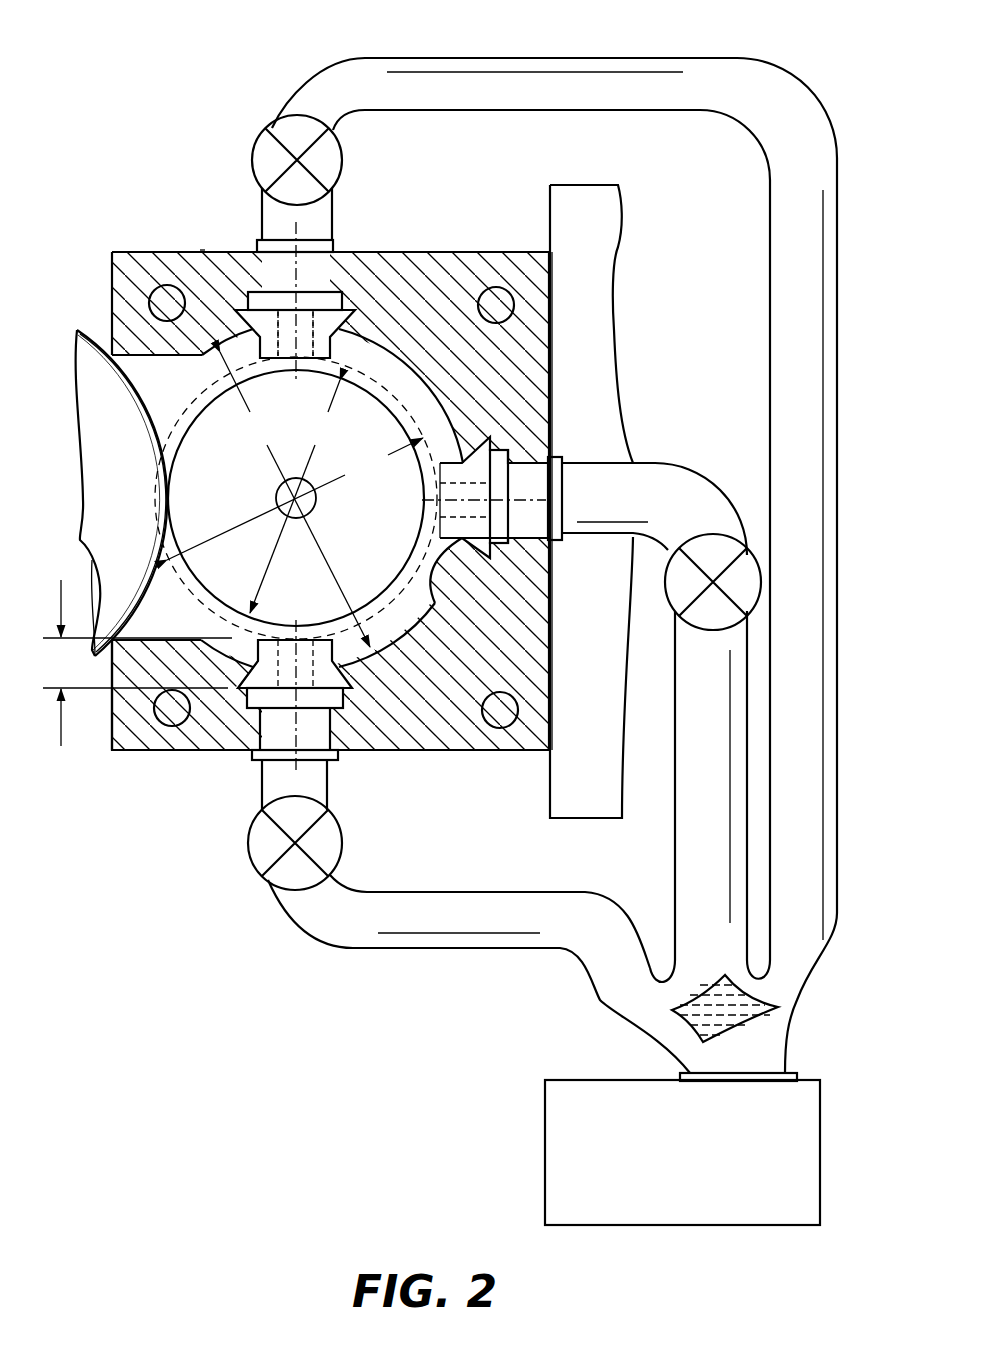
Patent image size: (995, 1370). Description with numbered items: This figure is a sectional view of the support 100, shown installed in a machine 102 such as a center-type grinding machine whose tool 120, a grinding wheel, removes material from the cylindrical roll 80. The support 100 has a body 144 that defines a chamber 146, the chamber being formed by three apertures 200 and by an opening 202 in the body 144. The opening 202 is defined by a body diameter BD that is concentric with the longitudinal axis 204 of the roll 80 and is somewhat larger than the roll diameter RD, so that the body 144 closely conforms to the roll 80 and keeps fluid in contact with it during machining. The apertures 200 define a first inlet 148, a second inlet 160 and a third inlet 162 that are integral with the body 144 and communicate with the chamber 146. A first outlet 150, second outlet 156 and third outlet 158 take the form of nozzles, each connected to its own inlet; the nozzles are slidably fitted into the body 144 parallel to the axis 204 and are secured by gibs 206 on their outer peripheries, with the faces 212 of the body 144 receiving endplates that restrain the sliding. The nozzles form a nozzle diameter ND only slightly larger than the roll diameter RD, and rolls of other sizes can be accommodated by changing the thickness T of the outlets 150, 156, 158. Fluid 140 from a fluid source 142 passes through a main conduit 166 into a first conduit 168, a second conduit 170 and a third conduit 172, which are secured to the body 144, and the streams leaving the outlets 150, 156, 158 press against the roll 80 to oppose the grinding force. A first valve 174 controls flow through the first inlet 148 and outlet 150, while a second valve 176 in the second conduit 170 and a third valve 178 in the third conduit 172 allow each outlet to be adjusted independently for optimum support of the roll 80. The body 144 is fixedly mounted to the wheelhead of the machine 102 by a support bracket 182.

The support 100 is at (193, 135).
The machine 102 is at (694, 203).
The roll 80 is at (207, 407).
The tool 120 is at (135, 603).
The fluid 140 is at (688, 1023).
The fluid source 142 is at (558, 1177).
The body 144 is at (160, 248).
The chamber 146 is at (128, 416).
The first inlet 148 is at (550, 458).
The first outlet 150 is at (436, 602).
The second outlet 156 is at (368, 349).
The third outlet 158 is at (253, 660).
The second inlet 160 is at (258, 238).
The third inlet 162 is at (333, 760).
The main conduit 166 is at (597, 990).
The first conduit 168 is at (675, 658).
The second conduit 170 is at (735, 57).
The third conduit 172 is at (303, 930).
The first valve 174 is at (722, 544).
The second valve 176 is at (330, 149).
The third valve 178 is at (268, 858).
The support bracket 182 is at (565, 820).
The apertures 200 is at (323, 274).
The opening 202 is at (142, 505).
The longitudinal axis 204 is at (294, 502).
The gibs 206 is at (402, 270).
The faces 212 is at (500, 256).
The body diameter BD is at (295, 499).
The nozzle diameter ND is at (297, 496).
The roll diameter RD is at (295, 499).
The thickness T is at (137, 663).